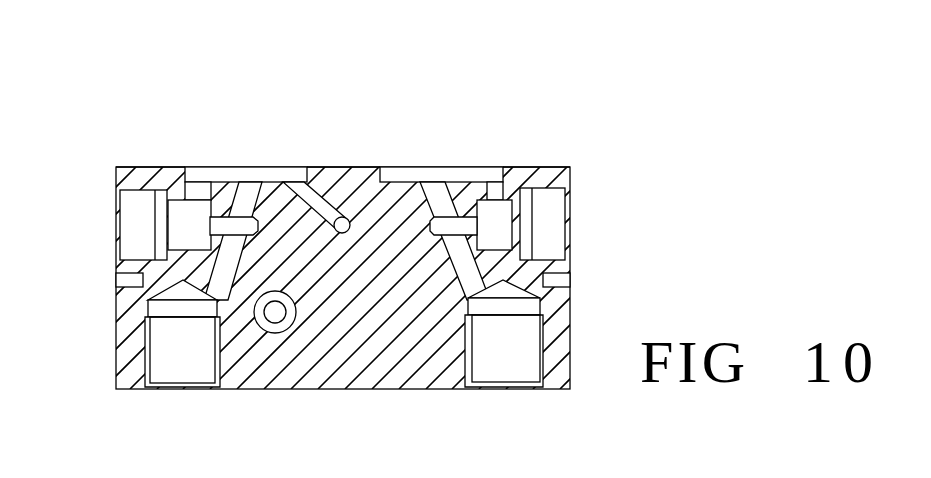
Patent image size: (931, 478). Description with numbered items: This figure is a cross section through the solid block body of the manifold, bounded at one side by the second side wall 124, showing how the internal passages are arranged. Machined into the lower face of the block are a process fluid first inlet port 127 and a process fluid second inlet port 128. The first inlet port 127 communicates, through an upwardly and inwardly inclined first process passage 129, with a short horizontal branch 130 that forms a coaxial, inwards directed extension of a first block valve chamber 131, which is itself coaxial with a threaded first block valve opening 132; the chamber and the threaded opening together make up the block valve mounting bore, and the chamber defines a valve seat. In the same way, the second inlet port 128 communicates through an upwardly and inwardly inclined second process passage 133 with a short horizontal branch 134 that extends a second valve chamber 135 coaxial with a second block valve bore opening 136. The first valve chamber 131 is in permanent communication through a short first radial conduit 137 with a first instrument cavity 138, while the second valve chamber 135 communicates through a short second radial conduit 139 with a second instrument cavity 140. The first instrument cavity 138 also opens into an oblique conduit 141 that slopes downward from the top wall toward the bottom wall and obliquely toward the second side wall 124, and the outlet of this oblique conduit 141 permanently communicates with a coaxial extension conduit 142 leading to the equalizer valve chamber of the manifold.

The second side wall 124 is at (572, 350).
The process fluid first inlet port 127 is at (210, 365).
The process fluid second inlet port 128 is at (474, 340).
The first process passage 129 is at (270, 342).
The short horizontal branch 130 is at (225, 167).
The first block valve chamber 131 is at (130, 236).
The threaded first block valve opening 132 is at (122, 214).
The second process passage 133 is at (460, 290).
The short horizontal branch 134 is at (468, 166).
The valve chamber 135 is at (540, 240).
The second block valve bore opening 136 is at (560, 218).
The first radial conduit 137 is at (143, 166).
The first instrument cavity 138 is at (268, 166).
The second radial conduit 139 is at (562, 166).
The second instrument cavity 140 is at (410, 166).
The oblique conduit 141 is at (333, 167).
The coaxial extension conduit 142 is at (365, 166).